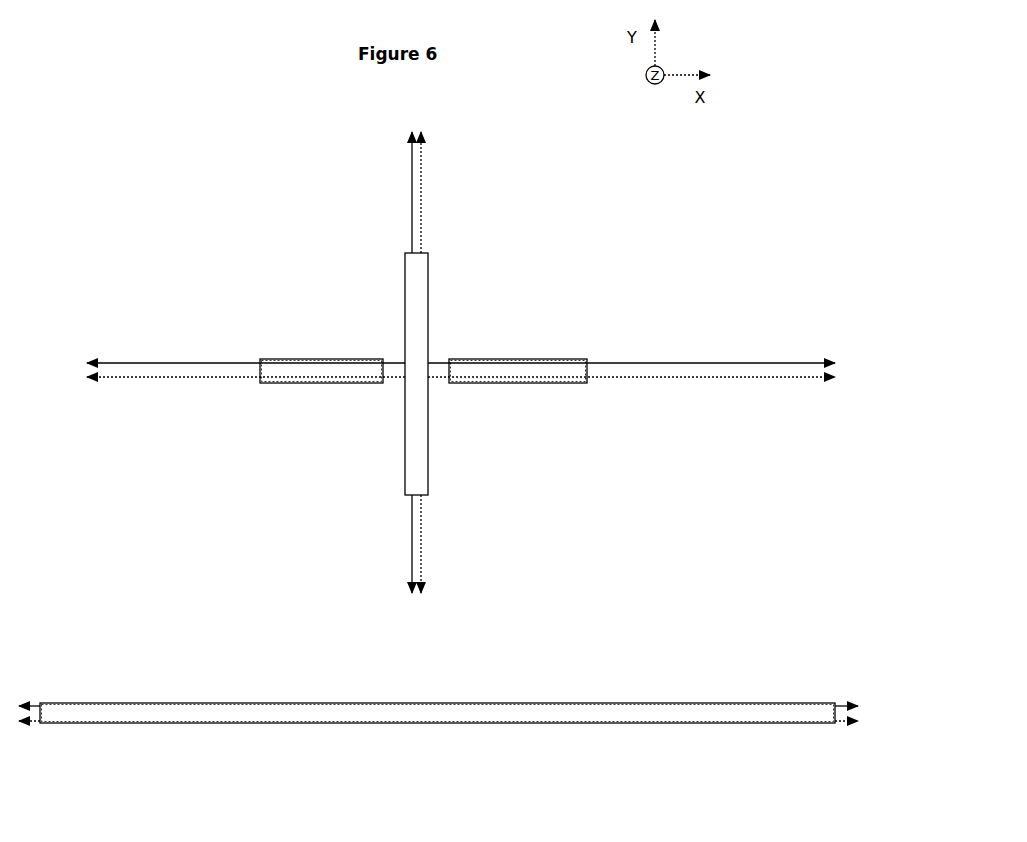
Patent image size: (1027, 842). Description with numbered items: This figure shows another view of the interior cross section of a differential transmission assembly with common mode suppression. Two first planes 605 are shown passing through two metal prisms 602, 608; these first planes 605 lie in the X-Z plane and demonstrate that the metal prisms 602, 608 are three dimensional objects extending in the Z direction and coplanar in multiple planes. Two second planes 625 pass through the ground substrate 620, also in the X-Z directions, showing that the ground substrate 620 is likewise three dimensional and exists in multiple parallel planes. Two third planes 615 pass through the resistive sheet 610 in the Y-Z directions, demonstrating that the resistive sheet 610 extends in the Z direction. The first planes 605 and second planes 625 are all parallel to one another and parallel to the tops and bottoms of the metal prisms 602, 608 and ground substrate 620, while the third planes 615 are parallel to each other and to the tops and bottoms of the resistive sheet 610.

The metal prism 602 is at (321, 325).
The first planes 605 is at (798, 384).
The metal prism 608 is at (518, 329).
The resistive sheet 610 is at (338, 374).
The third planes 615 is at (399, 211).
The ground substrate 620 is at (437, 742).
The second planes 625 is at (851, 752).